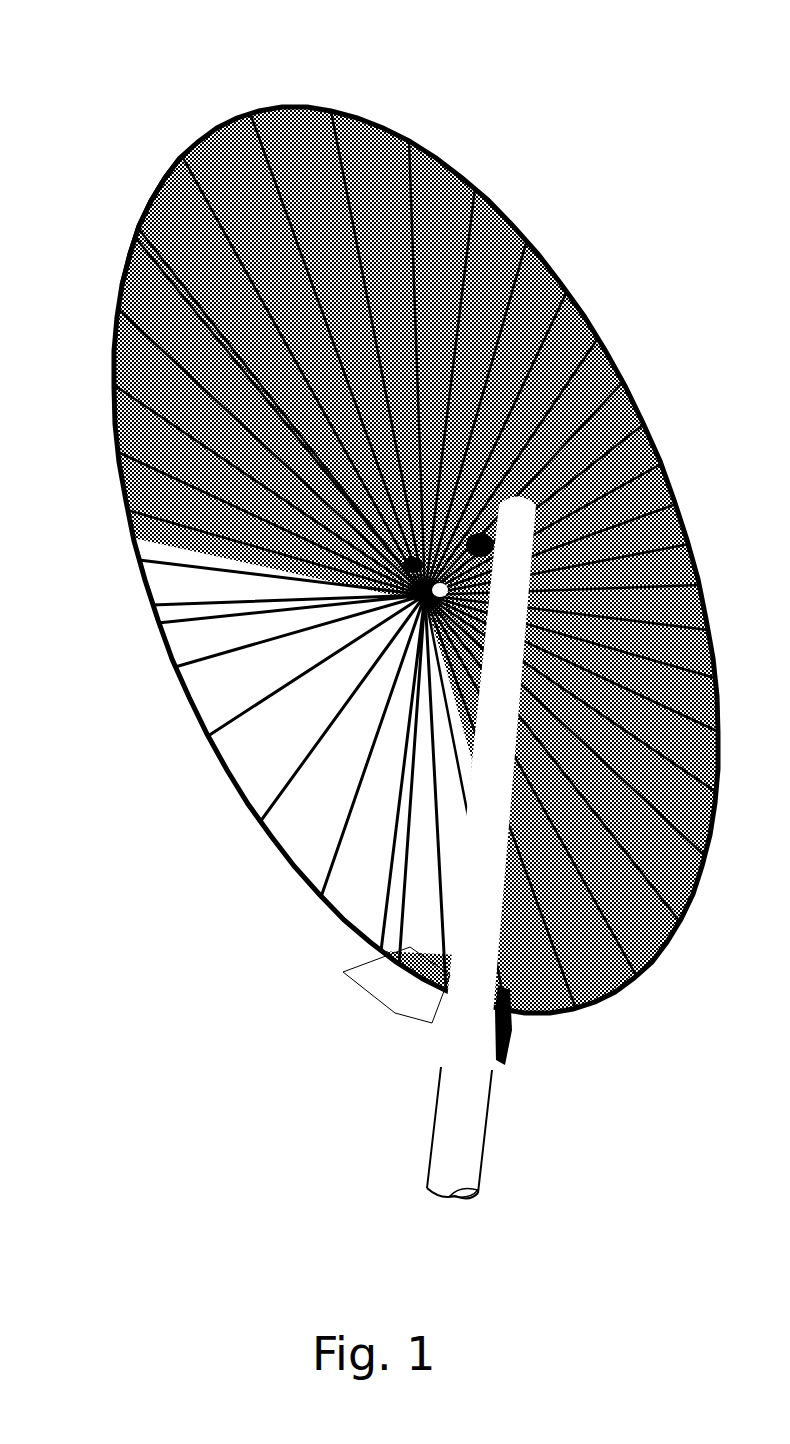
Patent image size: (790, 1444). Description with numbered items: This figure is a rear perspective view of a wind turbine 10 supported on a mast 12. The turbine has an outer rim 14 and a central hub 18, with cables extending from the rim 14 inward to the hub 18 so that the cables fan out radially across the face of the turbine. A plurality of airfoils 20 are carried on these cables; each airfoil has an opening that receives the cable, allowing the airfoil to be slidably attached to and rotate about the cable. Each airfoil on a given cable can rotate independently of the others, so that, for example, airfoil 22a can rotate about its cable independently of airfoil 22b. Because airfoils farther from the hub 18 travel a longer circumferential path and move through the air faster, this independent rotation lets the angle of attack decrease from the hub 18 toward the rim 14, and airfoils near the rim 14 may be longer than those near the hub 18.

The wind turbine 10 is at (379, 601).
The mast 12 is at (428, 1138).
The rim 14 is at (226, 136).
The hub 18 is at (447, 584).
The airfoils 20 is at (168, 206).
The airfoil 22a is at (141, 263).
The airfoil 22b is at (180, 292).